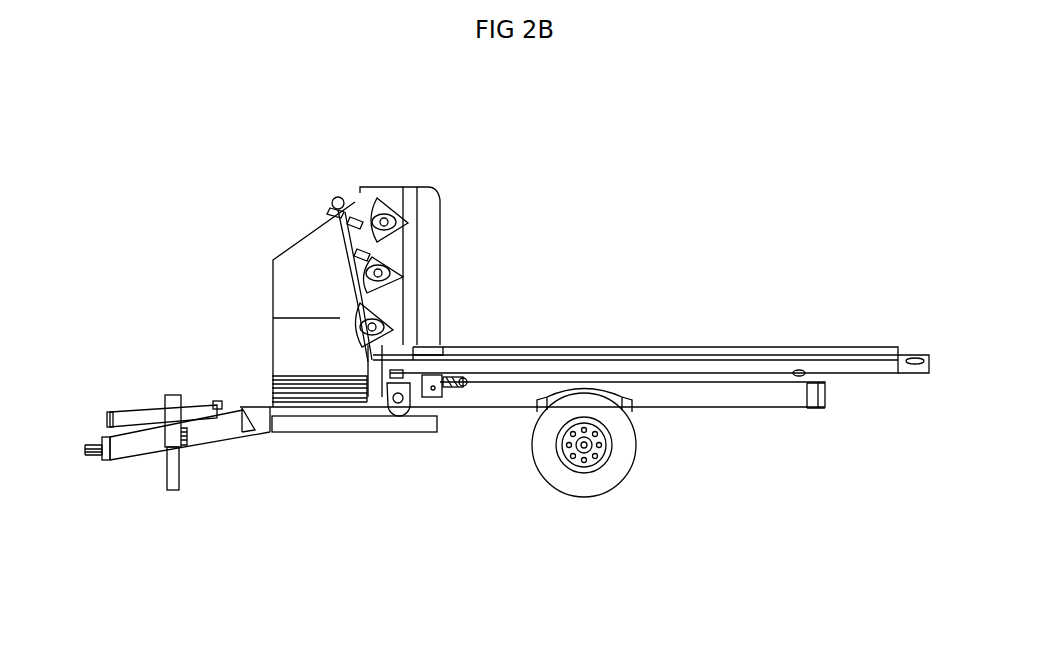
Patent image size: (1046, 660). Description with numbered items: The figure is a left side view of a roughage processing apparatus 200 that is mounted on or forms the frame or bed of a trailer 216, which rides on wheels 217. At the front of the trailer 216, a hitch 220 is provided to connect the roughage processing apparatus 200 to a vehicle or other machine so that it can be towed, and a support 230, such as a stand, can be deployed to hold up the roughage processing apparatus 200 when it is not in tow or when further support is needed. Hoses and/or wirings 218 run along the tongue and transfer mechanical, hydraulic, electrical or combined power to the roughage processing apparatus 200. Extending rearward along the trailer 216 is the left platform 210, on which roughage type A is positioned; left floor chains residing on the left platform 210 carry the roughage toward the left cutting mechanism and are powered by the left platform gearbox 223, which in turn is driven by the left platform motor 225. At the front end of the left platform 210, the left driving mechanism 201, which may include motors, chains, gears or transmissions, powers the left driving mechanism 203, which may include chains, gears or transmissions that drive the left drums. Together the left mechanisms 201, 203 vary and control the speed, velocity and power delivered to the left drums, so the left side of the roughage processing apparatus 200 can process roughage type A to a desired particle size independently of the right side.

The roughage processing apparatus 200 is at (793, 609).
The left driving mechanism 201 is at (334, 197).
The left driving mechanism 203 is at (392, 330).
The left platform 210 is at (880, 377).
The trailer 216 is at (785, 407).
The wheels 217 is at (622, 478).
The hoses and/or wirings 218 is at (148, 410).
The hitch 220 is at (92, 442).
The left platform gearbox 223 is at (432, 391).
The left platform motor 225 is at (438, 432).
The support 230 is at (177, 490).